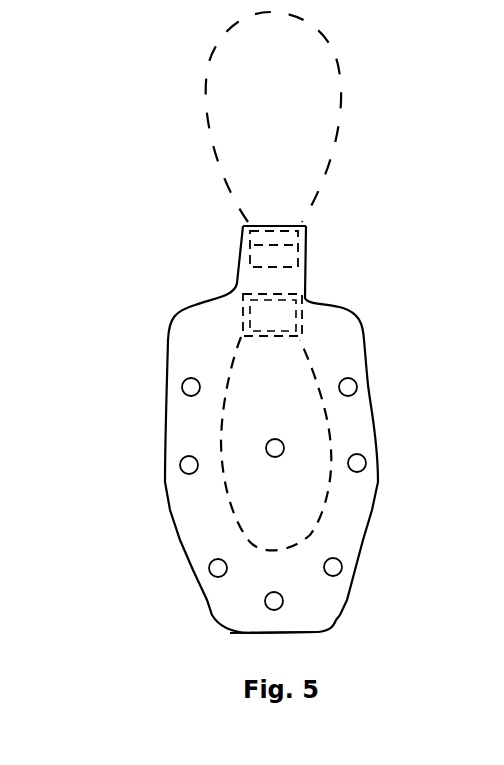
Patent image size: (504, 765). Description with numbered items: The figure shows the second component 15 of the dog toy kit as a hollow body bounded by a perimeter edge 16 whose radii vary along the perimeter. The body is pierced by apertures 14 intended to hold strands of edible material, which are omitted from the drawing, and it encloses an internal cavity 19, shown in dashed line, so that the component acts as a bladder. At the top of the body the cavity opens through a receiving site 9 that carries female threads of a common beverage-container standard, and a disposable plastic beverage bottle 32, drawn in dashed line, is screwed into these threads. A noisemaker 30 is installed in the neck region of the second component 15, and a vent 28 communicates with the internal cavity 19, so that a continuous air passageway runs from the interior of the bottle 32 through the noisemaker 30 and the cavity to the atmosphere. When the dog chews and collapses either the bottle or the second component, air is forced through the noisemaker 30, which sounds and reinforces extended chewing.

The disposable plastic beverage bottle 32 is at (342, 88).
The receiving site 9 is at (277, 249).
The noisemaker 30 is at (272, 312).
The apertures 14 is at (182, 380).
The vent 28 is at (265, 446).
The internal cavity 19 is at (325, 398).
The second component 15 is at (374, 519).
The perimeter edge 16 is at (335, 632).